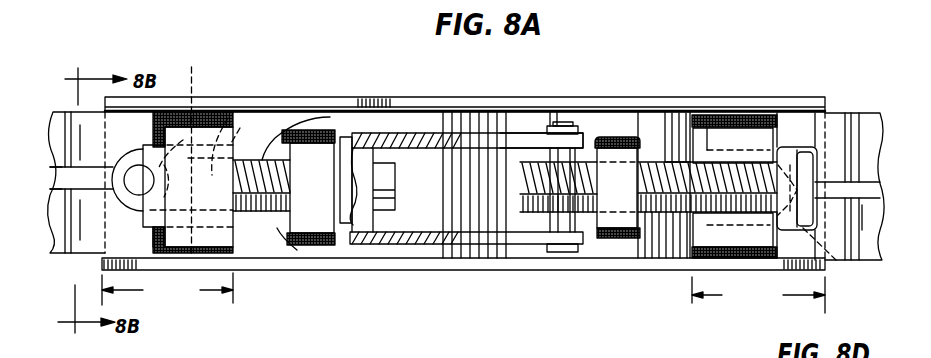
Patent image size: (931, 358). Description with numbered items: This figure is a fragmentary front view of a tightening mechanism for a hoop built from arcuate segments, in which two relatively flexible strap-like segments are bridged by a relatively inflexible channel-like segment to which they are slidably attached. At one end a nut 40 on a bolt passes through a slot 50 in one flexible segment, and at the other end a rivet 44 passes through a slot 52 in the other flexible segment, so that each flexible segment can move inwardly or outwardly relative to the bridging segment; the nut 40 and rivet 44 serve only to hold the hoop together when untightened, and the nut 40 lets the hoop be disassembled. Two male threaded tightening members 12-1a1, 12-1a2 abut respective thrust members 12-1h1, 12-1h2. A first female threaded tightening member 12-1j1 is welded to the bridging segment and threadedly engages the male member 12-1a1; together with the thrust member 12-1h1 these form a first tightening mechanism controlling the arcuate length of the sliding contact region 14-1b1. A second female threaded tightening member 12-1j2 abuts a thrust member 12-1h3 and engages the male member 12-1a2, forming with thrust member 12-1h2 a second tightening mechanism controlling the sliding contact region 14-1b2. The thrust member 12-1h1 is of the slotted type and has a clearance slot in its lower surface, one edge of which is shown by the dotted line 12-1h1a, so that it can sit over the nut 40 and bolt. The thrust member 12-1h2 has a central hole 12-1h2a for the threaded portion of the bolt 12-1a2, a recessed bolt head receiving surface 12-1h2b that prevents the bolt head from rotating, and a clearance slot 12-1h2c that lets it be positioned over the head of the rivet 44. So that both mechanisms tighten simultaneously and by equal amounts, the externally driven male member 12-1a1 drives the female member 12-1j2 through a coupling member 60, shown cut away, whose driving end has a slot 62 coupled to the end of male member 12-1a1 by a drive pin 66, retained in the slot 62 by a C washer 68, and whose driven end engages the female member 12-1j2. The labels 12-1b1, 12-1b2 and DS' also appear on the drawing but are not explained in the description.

The rivet 44 is at (128, 150).
The thrust member 12-1h2 is at (236, 240).
The central hole 12-1h2a is at (236, 110).
The recessed bolt head receiving surface 12-1h2b is at (216, 149).
The clearance slot 12-1h2c is at (240, 128).
The thrust member 12-1h3 is at (297, 258).
The second female threaded tightening member 12-1j2 is at (378, 232).
The male threaded tightening member 12-1a2 is at (330, 117).
The slot 62 is at (500, 237).
The coupling member 60 is at (432, 240).
The C washer 68 is at (582, 133).
The drive pin 66 is at (553, 248).
The first female threaded tightening member 12-1j1 is at (622, 258).
The thrust member 12-1h1 is at (682, 232).
The male threaded tightening member 12-1a1 is at (668, 153).
The clearance slot edge 12-1h1a is at (698, 112).
The right nut 12-1b1 is at (790, 147).
The rod end dashed profile DS' is at (795, 143).
The slot 50 is at (873, 217).
The nut 40 is at (845, 265).
The slot 52 is at (62, 187).
The left nut pad 12-1b2 is at (153, 228).
The sliding contact region 14-1b2 is at (167, 289).
The sliding contact region 14-1b1 is at (758, 295).